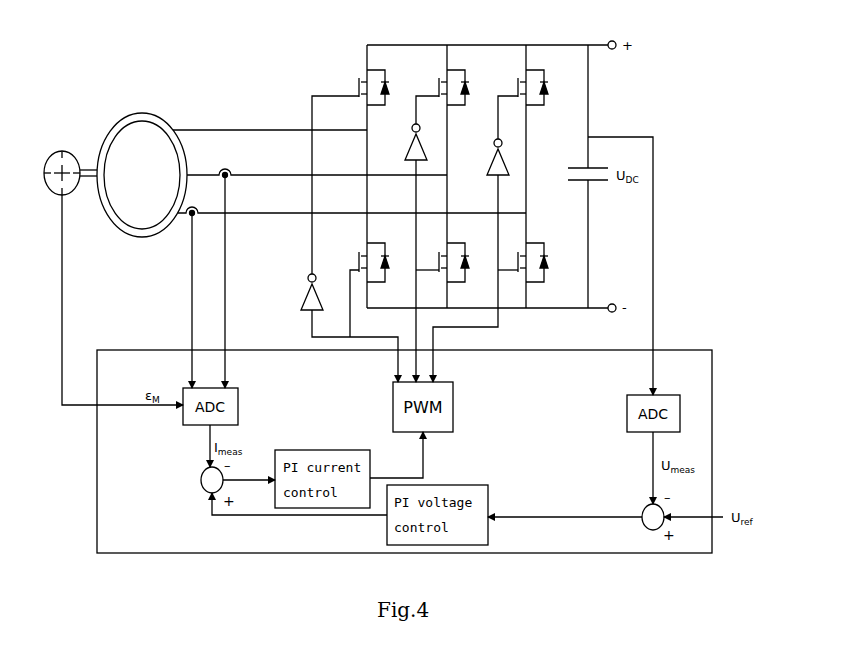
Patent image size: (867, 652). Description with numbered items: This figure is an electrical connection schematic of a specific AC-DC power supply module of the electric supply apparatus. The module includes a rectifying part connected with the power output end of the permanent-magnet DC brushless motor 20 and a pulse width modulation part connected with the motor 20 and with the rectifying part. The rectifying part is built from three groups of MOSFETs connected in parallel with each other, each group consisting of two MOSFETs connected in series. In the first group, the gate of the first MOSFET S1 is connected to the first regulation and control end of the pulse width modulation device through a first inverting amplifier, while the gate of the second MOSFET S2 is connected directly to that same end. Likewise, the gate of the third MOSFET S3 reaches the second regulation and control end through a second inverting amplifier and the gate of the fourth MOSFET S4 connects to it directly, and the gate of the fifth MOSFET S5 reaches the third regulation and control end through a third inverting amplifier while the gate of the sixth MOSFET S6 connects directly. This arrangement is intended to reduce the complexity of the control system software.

The permanent-magnet DC brushless motor 20 is at (148, 162).
The first metal-oxide semiconductor field effect transistor MOSFET S1 is at (384, 87).
The second metal-oxide semiconductor field effect transistor MOSFET S2 is at (464, 87).
The third metal-oxide semiconductor field effect transistor MOSFET S3 is at (543, 87).
The fourth metal-oxide semiconductor field effect transistor MOSFET S4 is at (384, 262).
The fifth metal-oxide semiconductor field effect transistor MOSFET S5 is at (464, 262).
The sixth metal-oxide semiconductor field effect transistor MOSFET S6 is at (543, 262).